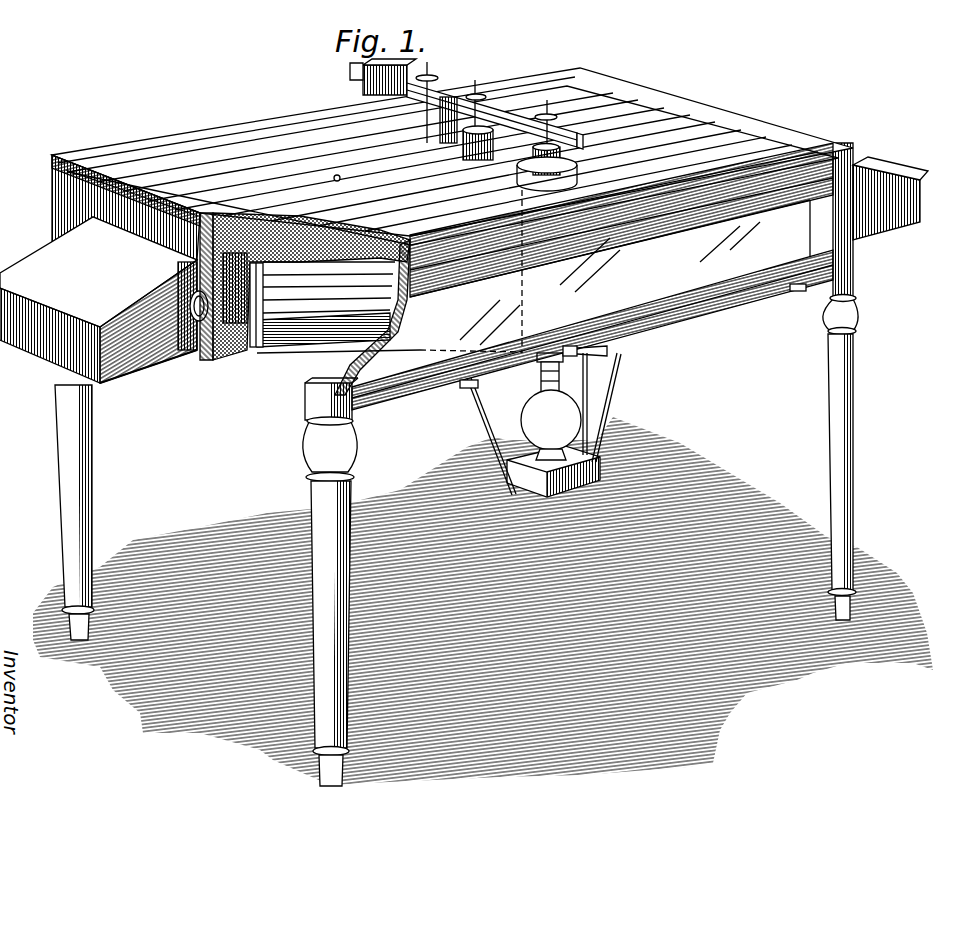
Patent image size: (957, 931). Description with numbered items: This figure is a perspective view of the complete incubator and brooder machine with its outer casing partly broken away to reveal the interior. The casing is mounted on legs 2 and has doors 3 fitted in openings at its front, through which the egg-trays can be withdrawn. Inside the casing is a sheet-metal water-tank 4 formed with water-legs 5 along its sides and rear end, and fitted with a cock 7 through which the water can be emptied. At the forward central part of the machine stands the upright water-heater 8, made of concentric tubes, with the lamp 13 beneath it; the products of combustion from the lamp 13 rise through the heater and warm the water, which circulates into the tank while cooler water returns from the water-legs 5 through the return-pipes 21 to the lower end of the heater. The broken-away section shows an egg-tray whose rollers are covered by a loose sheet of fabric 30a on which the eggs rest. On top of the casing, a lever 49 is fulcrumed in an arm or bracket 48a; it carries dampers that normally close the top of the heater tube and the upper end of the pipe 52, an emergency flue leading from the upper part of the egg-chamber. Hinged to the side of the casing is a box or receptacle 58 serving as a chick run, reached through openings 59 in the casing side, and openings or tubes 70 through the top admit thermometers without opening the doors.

The legs 2 is at (322, 494).
The doors 3 is at (410, 386).
The water-tank 4 is at (310, 223).
The water-legs 5 is at (244, 326).
The cock 7 is at (228, 137).
The water-heater 8 is at (537, 372).
The lamp 13 is at (567, 425).
The return-pipes 21 is at (298, 356).
The sheet of fabric 30a is at (273, 345).
The arm or bracket 48a is at (362, 90).
The lever 49 is at (441, 98).
The pipe 52 is at (473, 161).
The box or receptacle 58 is at (165, 360).
The openings 59 is at (205, 345).
The openings or tubes 70 is at (333, 178).